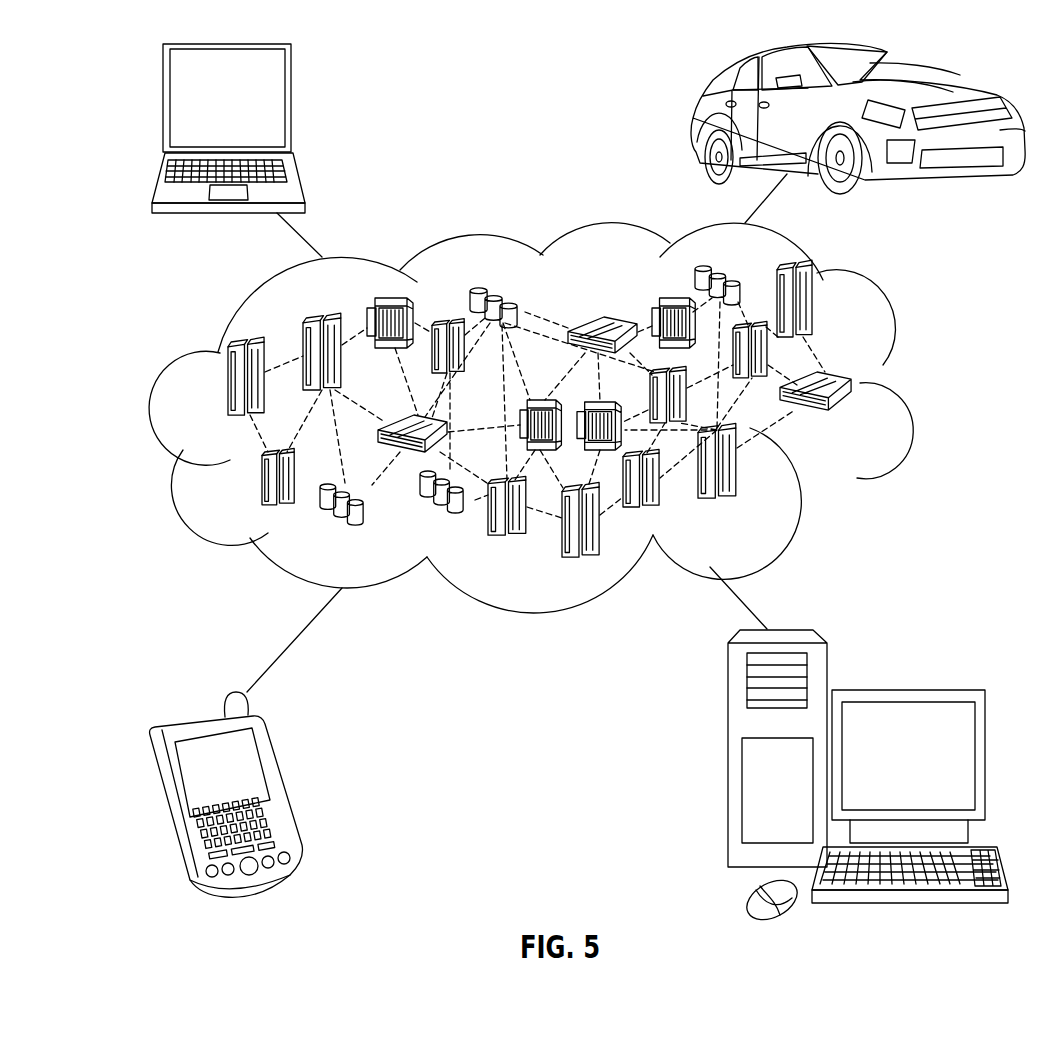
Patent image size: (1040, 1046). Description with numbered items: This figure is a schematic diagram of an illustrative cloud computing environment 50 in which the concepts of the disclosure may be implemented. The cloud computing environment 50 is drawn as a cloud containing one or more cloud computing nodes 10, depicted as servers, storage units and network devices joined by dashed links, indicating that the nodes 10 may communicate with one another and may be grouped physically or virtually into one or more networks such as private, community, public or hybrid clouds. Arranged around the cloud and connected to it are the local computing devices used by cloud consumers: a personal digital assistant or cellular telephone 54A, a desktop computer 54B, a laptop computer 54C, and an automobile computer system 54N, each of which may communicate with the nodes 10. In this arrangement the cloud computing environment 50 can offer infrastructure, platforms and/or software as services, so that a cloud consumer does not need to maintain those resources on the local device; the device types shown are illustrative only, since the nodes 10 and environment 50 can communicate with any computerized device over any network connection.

The cloud computing node 10 is at (852, 425).
The cloud computing environment 50 is at (908, 388).
The personal digital assistant or cellular telephone 54A is at (282, 784).
The desktop computer 54B is at (905, 688).
The laptop computer 54C is at (292, 106).
The automobile computer system 54N is at (703, 120).